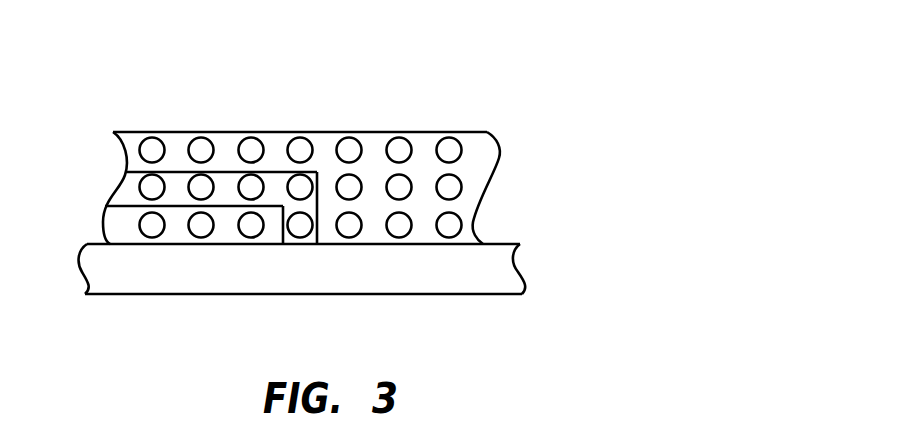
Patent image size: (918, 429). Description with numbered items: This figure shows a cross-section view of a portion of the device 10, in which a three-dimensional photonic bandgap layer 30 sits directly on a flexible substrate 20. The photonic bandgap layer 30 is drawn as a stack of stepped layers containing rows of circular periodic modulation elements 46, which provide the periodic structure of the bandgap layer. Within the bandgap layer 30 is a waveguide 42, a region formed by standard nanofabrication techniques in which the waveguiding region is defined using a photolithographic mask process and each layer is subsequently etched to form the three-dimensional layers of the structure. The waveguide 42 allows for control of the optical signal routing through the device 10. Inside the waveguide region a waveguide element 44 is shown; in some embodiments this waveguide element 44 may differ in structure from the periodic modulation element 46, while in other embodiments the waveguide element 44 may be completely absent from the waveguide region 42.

The device 10 is at (500, 98).
The flexible substrate 20 is at (498, 268).
The photonic bandgap layer 30 is at (477, 163).
The waveguide 42 is at (274, 188).
The waveguide element 44 is at (150, 188).
The periodic modulation element 46 is at (349, 150).